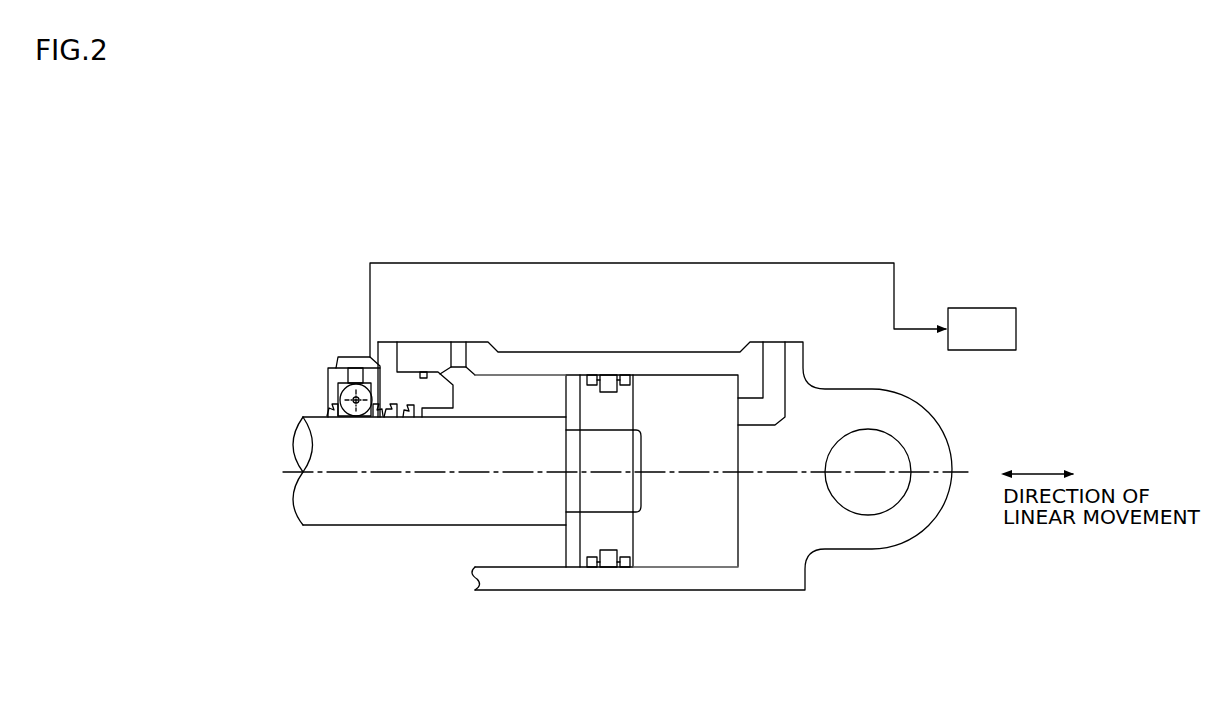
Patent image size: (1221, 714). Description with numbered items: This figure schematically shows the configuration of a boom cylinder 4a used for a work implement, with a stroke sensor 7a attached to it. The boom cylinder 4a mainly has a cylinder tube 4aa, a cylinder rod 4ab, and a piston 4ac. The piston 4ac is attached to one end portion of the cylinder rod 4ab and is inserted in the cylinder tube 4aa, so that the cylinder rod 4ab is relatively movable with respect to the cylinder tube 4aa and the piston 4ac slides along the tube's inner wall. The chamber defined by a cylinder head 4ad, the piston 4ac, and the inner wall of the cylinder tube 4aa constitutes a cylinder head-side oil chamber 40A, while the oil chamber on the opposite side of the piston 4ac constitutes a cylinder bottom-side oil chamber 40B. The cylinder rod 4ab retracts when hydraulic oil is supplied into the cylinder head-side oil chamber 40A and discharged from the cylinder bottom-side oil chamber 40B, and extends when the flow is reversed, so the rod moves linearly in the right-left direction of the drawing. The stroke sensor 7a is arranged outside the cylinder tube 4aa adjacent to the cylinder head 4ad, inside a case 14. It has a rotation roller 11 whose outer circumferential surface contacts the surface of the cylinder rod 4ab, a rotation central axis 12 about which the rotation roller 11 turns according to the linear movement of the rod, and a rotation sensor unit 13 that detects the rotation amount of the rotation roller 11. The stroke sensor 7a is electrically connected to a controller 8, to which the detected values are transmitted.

The boom cylinder 4a is at (966, 445).
The cylinder tube 4aa is at (519, 580).
The cylinder rod 4ab is at (323, 513).
The piston 4ac is at (636, 406).
The cylinder head 4ad is at (380, 343).
The cylinder head-side oil chamber 40A is at (484, 400).
The cylinder bottom-side oil chamber 40B is at (721, 555).
The stroke sensor 7a is at (332, 352).
The controller 8 is at (983, 352).
The rotation roller 11 is at (350, 386).
The rotation central axis 12 is at (349, 400).
The rotation sensor unit 13 is at (342, 393).
The case 14 is at (354, 359).